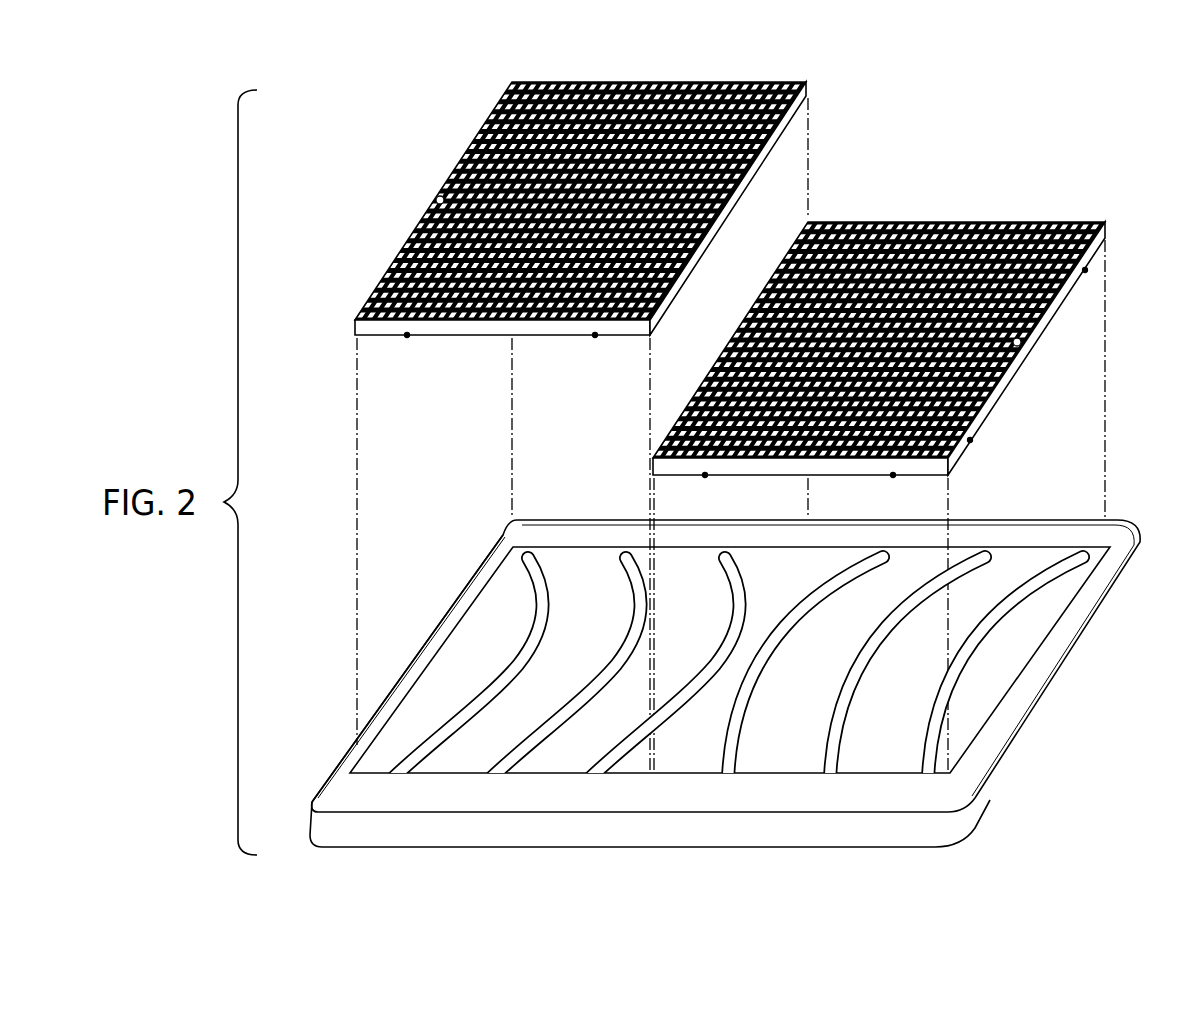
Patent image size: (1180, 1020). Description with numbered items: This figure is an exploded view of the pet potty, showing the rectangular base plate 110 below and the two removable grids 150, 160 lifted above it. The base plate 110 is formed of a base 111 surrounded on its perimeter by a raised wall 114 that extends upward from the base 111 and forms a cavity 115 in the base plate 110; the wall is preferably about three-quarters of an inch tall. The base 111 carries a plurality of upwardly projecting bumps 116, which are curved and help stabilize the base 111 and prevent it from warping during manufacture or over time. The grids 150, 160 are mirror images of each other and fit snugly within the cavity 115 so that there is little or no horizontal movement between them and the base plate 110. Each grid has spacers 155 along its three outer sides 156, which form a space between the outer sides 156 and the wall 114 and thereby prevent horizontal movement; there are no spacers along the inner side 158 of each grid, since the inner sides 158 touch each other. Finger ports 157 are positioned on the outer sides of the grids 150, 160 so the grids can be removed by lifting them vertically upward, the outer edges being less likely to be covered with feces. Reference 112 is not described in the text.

The base plate 110 is at (1060, 692).
The base 111 is at (527, 732).
The tray floor region 112 is at (775, 758).
The raised wall 114 is at (430, 660).
The cavity 115 is at (473, 758).
The bumps 116 is at (975, 555).
The grid 150 is at (993, 222).
The spacers 155 is at (407, 335).
The outer sides 156 is at (655, 82).
The finger ports 157 is at (435, 200).
The inner side 158 is at (723, 215).
The grid 160 is at (615, 82).